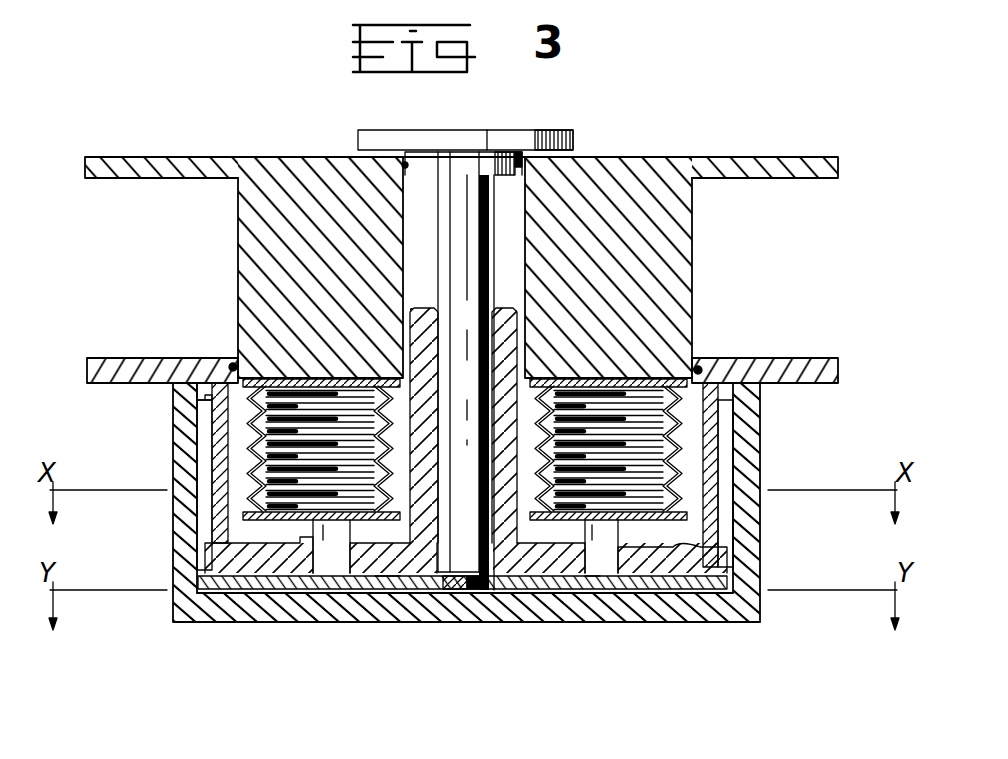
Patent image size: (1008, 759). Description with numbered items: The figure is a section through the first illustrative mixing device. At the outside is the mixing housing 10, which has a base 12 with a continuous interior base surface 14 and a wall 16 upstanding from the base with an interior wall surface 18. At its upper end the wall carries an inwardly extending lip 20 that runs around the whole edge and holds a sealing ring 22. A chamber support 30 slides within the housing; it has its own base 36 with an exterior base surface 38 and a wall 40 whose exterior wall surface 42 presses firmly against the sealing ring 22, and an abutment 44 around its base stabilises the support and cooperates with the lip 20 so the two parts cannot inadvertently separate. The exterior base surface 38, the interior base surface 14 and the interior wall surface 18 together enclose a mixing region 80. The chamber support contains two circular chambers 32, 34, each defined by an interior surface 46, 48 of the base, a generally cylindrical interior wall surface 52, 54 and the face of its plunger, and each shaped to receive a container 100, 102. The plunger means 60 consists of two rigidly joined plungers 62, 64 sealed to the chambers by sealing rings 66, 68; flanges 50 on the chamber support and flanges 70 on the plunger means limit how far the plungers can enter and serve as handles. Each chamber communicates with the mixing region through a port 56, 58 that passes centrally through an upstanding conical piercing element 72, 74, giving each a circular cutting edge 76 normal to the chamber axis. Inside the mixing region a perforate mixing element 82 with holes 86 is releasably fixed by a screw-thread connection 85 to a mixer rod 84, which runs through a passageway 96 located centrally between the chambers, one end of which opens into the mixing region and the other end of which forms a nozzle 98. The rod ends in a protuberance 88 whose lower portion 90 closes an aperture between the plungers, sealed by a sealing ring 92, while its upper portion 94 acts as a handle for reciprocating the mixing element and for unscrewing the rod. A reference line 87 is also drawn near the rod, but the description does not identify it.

The mixing housing 10 is at (765, 531).
The base 12 is at (513, 603).
The interior base surface 14 is at (383, 603).
The wall 16 is at (747, 417).
The interior wall surface 18 is at (733, 498).
The lip 20 is at (190, 410).
The sealing ring 22 is at (228, 368).
The chamber support 30 is at (203, 470).
The chamber 32 is at (205, 553).
The chamber 34 is at (700, 560).
The base 36 is at (263, 590).
The exterior base surface 38 is at (177, 595).
The wall 40 is at (257, 532).
The exterior wall surface 42 is at (200, 505).
The abutment 44 is at (210, 578).
The interior surface 46 is at (243, 593).
The interior surface 48 is at (750, 600).
The flanges 50 is at (110, 356).
The interior wall surface 52 is at (222, 447).
The interior wall surface 54 is at (725, 430).
The port 56 is at (310, 560).
The port 58 is at (690, 597).
The plunger means 60 is at (700, 280).
The plunger 62 is at (268, 247).
The plunger 64 is at (672, 227).
The sealing ring 66 is at (293, 410).
The sealing ring 68 is at (693, 367).
The flanges 70 is at (157, 162).
The piercing element 72 is at (430, 590).
The piercing element 74 is at (548, 605).
The cutting edge 76 is at (605, 560).
The mixing region 80 is at (388, 598).
The mixing element 82 is at (592, 578).
The mixer rod 84 is at (333, 583).
The screw-thread connection 85 is at (467, 600).
The holes 86 is at (640, 600).
The bore 87 is at (465, 197).
The protuberance 88 is at (506, 122).
The lower portion 90 is at (425, 163).
The sealing ring 92 is at (540, 128).
The upper portion 94 is at (428, 143).
The passageway 96 is at (422, 307).
The nozzle 98 is at (500, 313).
The container 100 is at (300, 410).
The container 102 is at (647, 415).